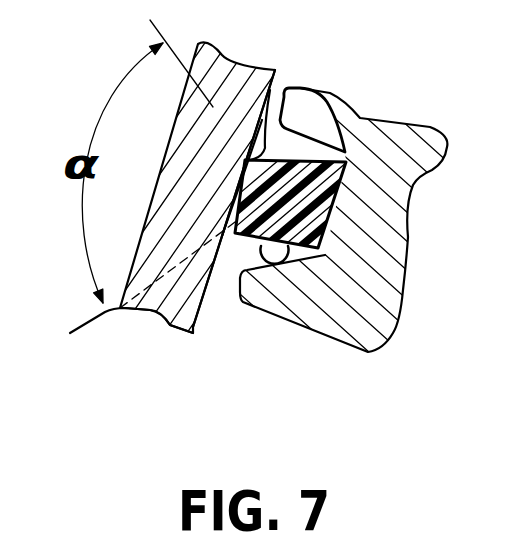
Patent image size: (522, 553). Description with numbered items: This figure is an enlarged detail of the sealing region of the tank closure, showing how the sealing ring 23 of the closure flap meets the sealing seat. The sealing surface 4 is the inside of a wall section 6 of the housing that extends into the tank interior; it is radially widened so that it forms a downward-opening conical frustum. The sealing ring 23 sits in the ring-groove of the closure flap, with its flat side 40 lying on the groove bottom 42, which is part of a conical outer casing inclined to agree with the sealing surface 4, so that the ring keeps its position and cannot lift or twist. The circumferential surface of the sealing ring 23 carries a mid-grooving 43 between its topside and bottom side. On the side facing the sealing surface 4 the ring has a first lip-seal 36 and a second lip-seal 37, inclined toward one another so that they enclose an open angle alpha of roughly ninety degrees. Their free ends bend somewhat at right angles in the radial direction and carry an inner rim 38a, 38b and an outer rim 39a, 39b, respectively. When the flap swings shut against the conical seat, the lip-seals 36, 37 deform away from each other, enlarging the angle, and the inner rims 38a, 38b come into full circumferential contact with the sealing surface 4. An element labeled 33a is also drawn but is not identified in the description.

The sealing surface 4 is at (205, 295).
The wall section 6 is at (183, 322).
The sealing ring 23 is at (298, 208).
The clamping jaw 33a is at (271, 91).
The first lip-seal 36 is at (242, 164).
The second lip-seal 37 is at (245, 273).
The inner rim 38a is at (238, 195).
The inner rim 38b is at (236, 233).
The outer rim 39a is at (320, 127).
The outer rim 39b is at (222, 225).
The flat side 40 is at (375, 265).
The groove bottom 42 is at (347, 240).
The mid-grooving 43 is at (340, 148).